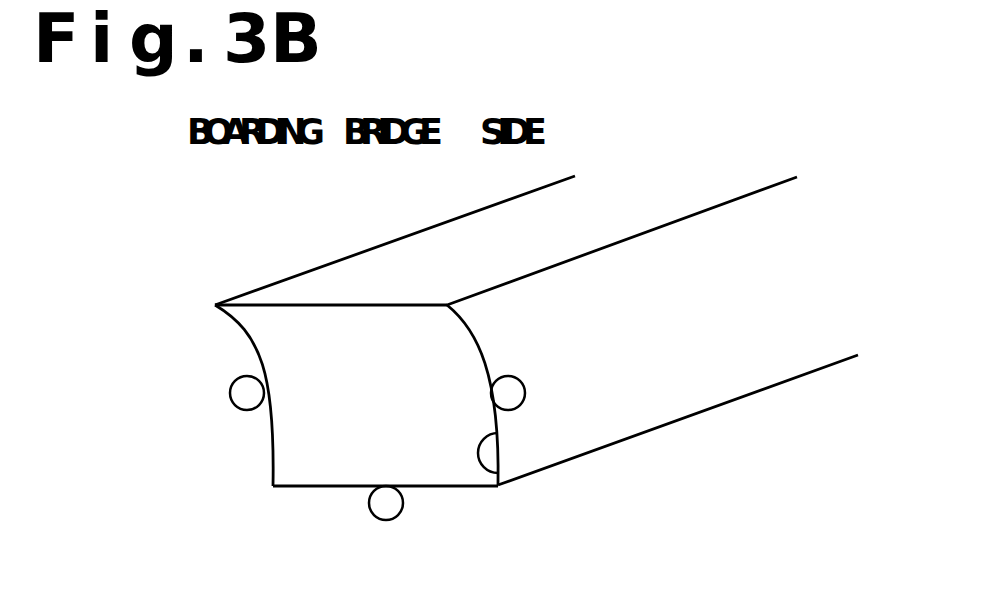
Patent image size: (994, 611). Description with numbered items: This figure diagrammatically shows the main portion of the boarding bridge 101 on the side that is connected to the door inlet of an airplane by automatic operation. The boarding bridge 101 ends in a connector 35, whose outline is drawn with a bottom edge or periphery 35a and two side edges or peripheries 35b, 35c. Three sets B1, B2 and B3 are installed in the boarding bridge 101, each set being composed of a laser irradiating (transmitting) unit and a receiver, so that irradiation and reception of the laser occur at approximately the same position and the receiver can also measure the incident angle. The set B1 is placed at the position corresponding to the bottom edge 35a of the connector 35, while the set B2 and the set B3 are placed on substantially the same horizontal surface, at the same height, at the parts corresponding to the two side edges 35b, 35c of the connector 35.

The boarding bridge 101 is at (709, 250).
The connector 35 is at (318, 412).
The bottom edge or periphery of connector 35a is at (418, 485).
The side edge or periphery of connector 35b is at (499, 479).
The side edge or periphery of connector 35c is at (257, 349).
The set of laser irradiating unit and receiver B1 is at (386, 523).
The set of laser irradiating unit and receiver B2 is at (529, 394).
The set of laser irradiating unit and receiver B3 is at (228, 394).